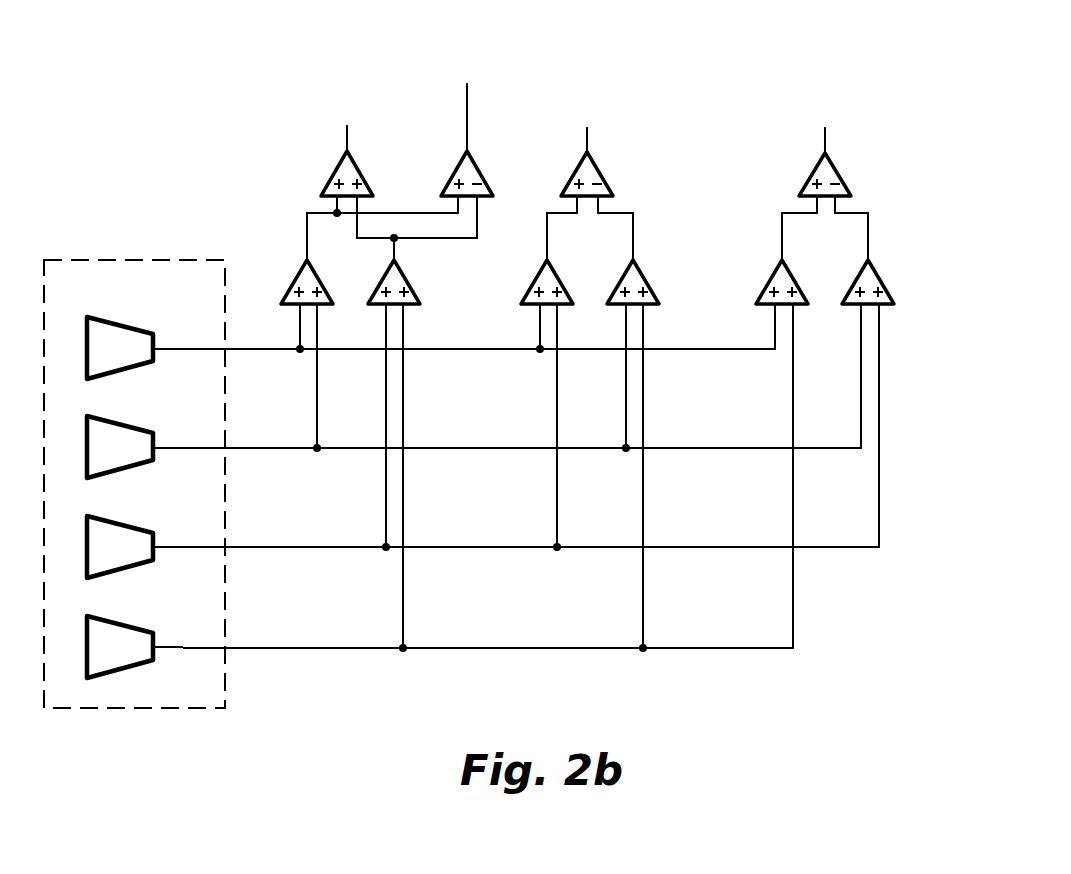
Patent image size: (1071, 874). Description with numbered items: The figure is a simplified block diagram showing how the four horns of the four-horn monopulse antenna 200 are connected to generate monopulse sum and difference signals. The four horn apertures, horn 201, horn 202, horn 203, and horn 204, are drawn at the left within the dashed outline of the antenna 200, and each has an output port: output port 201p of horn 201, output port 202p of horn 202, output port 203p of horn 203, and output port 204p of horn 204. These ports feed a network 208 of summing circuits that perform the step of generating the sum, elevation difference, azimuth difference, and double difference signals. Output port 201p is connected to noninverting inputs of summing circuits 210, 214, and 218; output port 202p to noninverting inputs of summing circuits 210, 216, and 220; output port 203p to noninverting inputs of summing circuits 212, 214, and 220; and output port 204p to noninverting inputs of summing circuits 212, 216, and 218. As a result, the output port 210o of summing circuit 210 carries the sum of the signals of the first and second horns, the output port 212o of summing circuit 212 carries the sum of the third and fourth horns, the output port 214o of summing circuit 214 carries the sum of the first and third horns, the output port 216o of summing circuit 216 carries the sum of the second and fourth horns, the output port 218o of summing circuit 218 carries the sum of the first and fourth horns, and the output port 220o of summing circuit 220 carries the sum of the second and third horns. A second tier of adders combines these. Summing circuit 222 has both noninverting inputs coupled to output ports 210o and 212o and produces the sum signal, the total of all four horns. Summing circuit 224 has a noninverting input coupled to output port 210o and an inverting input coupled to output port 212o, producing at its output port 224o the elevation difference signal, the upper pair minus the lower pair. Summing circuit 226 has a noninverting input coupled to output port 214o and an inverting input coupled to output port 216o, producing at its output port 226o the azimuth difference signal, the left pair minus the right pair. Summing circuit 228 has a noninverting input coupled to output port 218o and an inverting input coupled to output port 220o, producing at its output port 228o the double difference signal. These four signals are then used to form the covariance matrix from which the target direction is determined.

The four-horn monopulse antenna 200 is at (225, 699).
The horn 201 is at (118, 324).
The horn 202 is at (118, 427).
The horn 203 is at (120, 527).
The horn 204 is at (120, 627).
The output port of horn 201 201p is at (155, 346).
The output port of horn 202 202p is at (155, 448).
The output port of horn 203 203p is at (155, 546).
The output port of horn 204 204p is at (155, 646).
The monopulse signal generating network 208 is at (548, 703).
The summing circuit 210 is at (285, 298).
The output port of summing circuit 210 210o is at (307, 260).
The summing circuit 212 is at (417, 298).
The output port of summing circuit 212 212o is at (443, 240).
The summing circuit 214 is at (525, 305).
The output port of summing circuit 214 214o is at (547, 260).
The summing circuit 216 is at (655, 298).
The output port of summing circuit 216 216o is at (650, 226).
The summing circuit 218 is at (760, 305).
The output port of summing circuit 218 218o is at (782, 226).
The summing circuit 220 is at (890, 298).
The output port of summing circuit 220 220o is at (327, 147).
The summing circuit 222 is at (322, 185).
The summing circuit 224 is at (445, 185).
The output port of summing circuit 224 224o is at (467, 150).
The summing circuit 226 is at (607, 185).
The output port of summing circuit 226 226o is at (587, 152).
The summing circuit 228 is at (805, 185).
The output port of summing circuit 228 228o is at (825, 153).